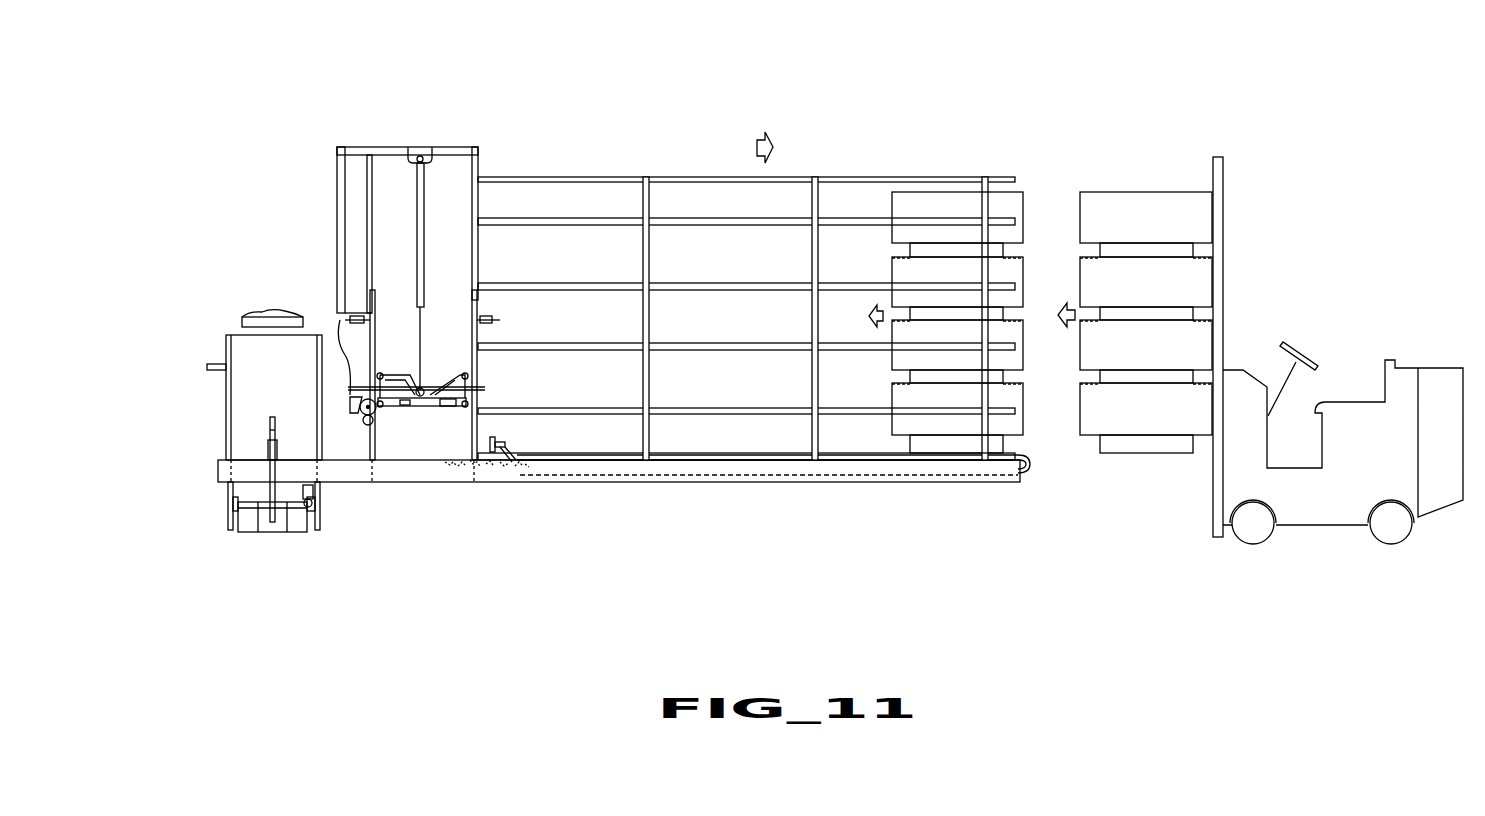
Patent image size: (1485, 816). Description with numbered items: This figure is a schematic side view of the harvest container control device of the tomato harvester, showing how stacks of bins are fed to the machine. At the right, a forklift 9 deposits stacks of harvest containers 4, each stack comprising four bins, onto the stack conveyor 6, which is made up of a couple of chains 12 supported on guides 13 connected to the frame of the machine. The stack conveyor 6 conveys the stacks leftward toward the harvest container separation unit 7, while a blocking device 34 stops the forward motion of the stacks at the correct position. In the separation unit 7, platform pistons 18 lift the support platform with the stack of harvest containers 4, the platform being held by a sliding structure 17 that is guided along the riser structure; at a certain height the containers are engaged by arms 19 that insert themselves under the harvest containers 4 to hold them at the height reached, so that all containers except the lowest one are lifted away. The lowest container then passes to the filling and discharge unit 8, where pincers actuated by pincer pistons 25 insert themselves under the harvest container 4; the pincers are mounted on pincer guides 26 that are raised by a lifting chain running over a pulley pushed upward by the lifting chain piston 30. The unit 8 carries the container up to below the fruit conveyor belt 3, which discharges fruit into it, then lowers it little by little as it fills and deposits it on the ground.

The fruit conveyor belt 3 is at (241, 316).
The harvest containers 4 is at (1100, 192).
The stack conveyor 6 is at (1047, 468).
The harvest container separation unit 7 is at (422, 115).
The filling and discharge unit 8 is at (207, 340).
The forklift 9 is at (1238, 365).
The chains 12 is at (1025, 475).
The guides 13 is at (680, 483).
The sliding structure 17 is at (465, 390).
The platform pistons 18 is at (425, 180).
The arms 19 is at (345, 320).
The pincer pistons 25 is at (315, 490).
The pincer guides 26 is at (408, 485).
The lifting chain piston 30 is at (268, 452).
The blocking device 34 is at (500, 440).